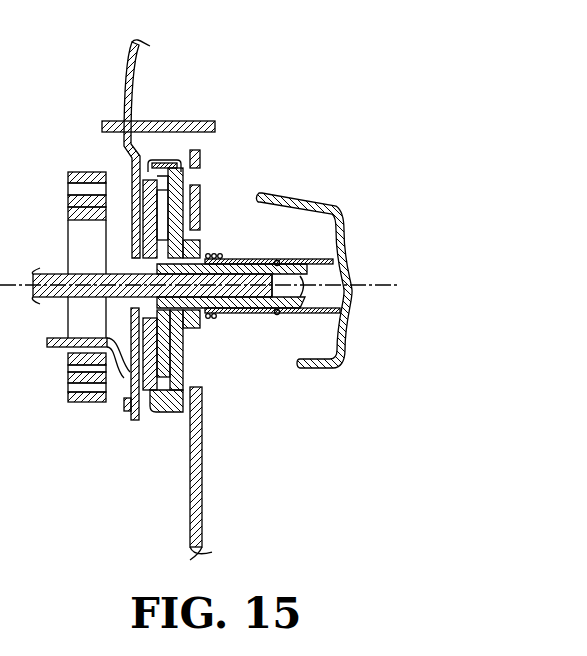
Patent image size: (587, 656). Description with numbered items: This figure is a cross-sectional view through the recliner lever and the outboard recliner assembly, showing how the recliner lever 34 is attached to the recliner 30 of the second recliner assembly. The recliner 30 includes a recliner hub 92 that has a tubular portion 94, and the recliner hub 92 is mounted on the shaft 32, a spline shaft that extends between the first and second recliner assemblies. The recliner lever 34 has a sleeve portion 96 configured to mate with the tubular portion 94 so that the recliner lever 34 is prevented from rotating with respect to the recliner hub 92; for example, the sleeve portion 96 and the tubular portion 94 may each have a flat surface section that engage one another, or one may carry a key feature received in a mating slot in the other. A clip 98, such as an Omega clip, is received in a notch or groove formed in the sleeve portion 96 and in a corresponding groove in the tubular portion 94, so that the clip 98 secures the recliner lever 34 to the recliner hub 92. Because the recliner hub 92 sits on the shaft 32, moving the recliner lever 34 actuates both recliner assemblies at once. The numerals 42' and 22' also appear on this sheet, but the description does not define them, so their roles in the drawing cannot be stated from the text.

The shaft 32 is at (42, 270).
The tubular portion 94 is at (345, 281).
The sleeve portion 96 is at (343, 216).
The clip 98 is at (277, 259).
The recliner lever 34 is at (300, 193).
The recliner 30 is at (201, 319).
The recliner hub 92 is at (166, 160).
The disc stack 42' is at (66, 391).
The wall 22' is at (111, 346).